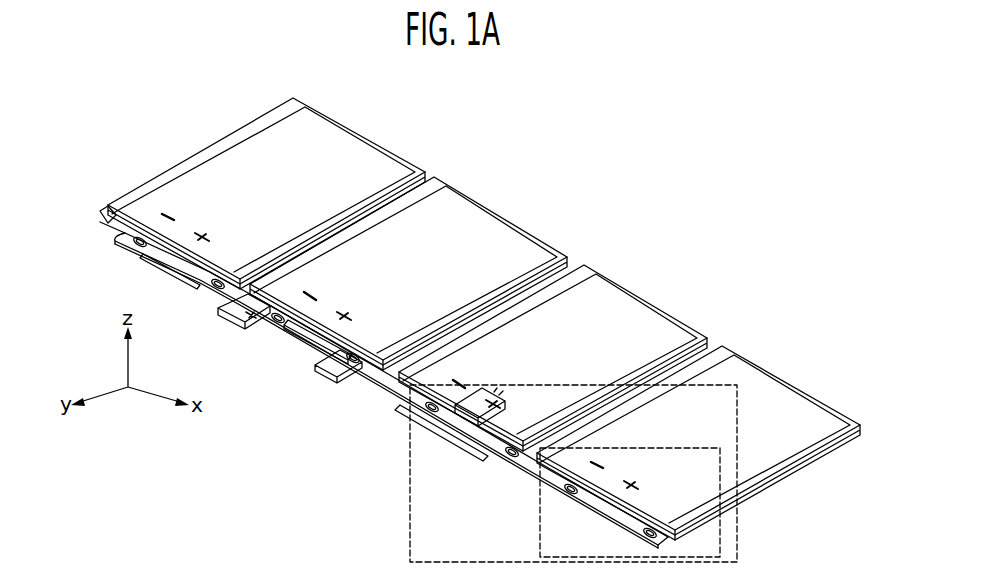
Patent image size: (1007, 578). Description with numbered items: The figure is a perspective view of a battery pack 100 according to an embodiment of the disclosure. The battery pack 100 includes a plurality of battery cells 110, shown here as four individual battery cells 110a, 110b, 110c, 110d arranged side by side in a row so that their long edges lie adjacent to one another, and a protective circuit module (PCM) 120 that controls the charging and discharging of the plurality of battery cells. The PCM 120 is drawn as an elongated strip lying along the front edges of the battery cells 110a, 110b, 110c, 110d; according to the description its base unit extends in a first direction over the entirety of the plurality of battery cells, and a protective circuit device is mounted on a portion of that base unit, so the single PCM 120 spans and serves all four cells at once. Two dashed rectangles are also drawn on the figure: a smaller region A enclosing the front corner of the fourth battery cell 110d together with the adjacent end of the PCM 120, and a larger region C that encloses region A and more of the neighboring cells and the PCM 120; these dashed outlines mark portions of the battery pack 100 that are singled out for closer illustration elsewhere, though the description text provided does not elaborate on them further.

The battery pack 100 is at (189, 120).
The battery cells 110 is at (833, 331).
The battery cell 110a is at (345, 132).
The battery cell 110b is at (482, 216).
The battery cell 110c is at (635, 300).
The battery cell 110d is at (772, 386).
The protective circuit module (PCM) 120 is at (335, 411).
The region A is at (722, 532).
The region C is at (739, 556).